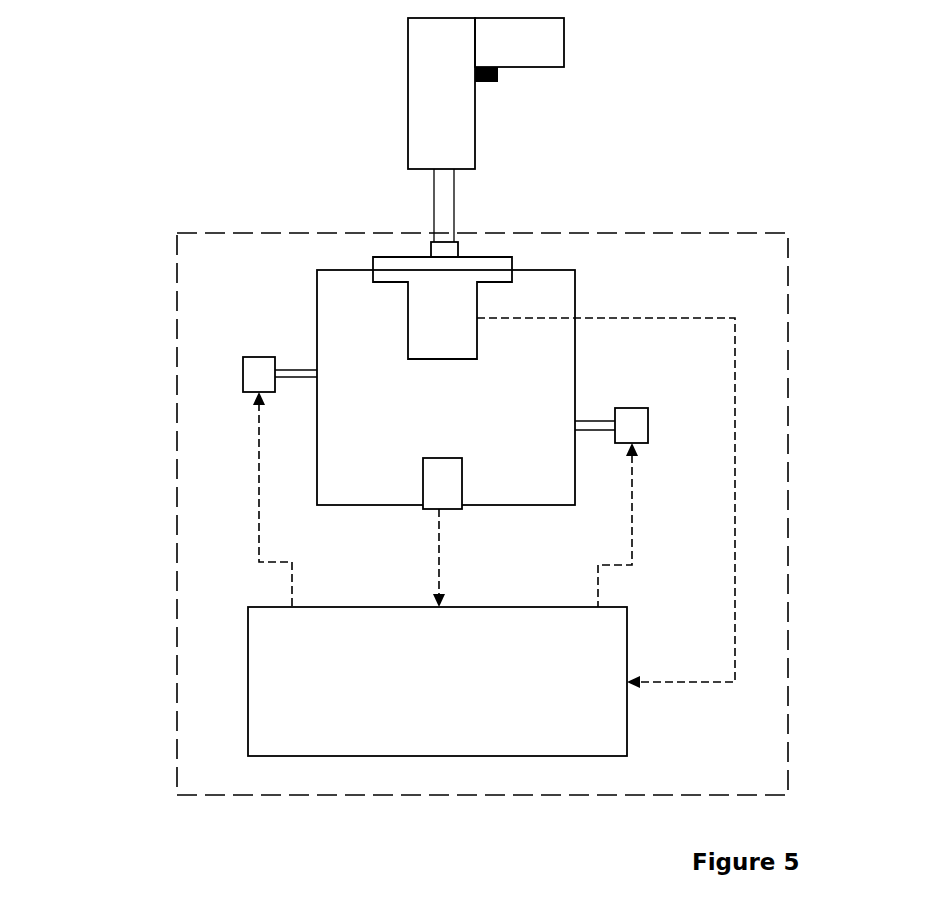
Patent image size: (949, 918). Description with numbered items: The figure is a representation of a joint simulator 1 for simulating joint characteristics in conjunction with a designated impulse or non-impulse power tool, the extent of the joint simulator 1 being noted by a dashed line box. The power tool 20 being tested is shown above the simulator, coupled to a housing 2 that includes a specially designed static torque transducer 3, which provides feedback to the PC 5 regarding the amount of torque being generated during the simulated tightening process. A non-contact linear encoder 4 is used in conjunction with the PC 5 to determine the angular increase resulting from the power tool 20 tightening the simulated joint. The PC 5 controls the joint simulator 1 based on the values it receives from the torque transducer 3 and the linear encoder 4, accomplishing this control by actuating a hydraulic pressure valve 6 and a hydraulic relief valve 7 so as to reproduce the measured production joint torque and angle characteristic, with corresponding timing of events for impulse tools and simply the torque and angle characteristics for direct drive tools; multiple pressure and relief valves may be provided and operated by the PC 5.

The joint simulator 1 is at (788, 353).
The housing 2 is at (317, 308).
The static torque transducer 3 is at (477, 303).
The non-contact linear encoder 4 is at (462, 492).
The PC 5 is at (627, 738).
The hydraulic pressure valve 6 is at (243, 375).
The hydraulic relief valve 7 is at (648, 424).
The power tool 20 is at (408, 82).